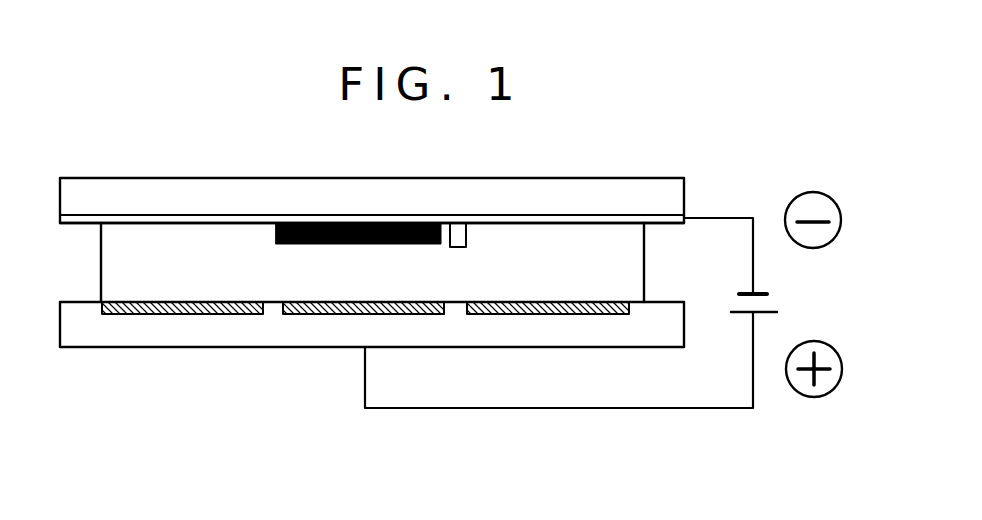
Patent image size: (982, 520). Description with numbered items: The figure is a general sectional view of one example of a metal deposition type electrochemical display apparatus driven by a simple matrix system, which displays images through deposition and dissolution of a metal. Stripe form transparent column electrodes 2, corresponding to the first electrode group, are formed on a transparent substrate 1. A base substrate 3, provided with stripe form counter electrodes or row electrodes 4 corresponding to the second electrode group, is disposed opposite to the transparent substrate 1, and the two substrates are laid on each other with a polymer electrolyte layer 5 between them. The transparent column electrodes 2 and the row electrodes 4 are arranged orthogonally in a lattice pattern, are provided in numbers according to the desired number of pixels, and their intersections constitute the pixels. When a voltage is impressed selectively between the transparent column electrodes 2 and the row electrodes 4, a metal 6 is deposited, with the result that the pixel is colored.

The transparent substrate 1 is at (574, 182).
The transparent column electrodes 2 is at (666, 217).
The base substrate 3 is at (130, 340).
The row electrodes 4 is at (322, 315).
The polymer electrolyte layer 5 is at (116, 264).
The metal 6 is at (283, 245).